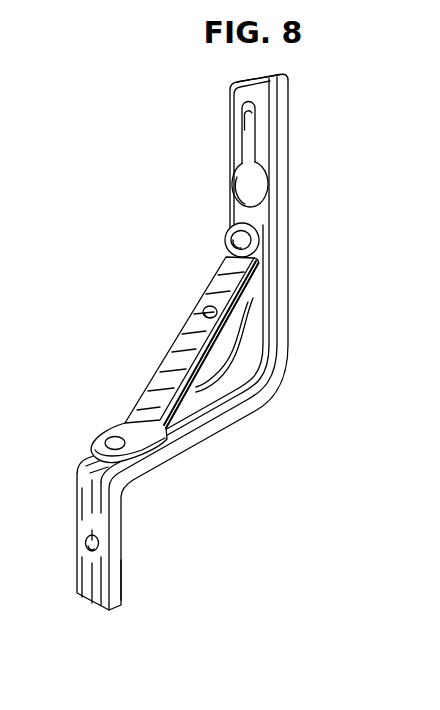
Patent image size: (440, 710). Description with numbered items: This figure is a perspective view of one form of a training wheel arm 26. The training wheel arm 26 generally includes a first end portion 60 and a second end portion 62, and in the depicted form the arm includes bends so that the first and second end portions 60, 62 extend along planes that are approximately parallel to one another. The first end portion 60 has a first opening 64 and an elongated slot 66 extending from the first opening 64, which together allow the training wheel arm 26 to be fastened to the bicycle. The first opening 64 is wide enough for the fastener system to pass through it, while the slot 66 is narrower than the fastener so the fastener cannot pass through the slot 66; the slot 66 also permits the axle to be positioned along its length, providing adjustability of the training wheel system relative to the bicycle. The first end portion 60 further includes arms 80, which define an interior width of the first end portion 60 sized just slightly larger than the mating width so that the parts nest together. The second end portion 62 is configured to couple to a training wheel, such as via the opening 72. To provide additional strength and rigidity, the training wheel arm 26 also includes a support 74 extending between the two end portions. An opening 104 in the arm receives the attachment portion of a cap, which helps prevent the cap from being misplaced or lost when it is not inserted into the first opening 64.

The training wheel arm 26 is at (289, 343).
The first end portion 60 is at (219, 334).
The second end portion 62 is at (143, 564).
The first opening 64 is at (236, 201).
The elongated slot 66 is at (258, 131).
The opening 72 is at (86, 546).
The support 74 is at (183, 352).
The arms 80 is at (282, 88).
The opening 104 is at (203, 312).